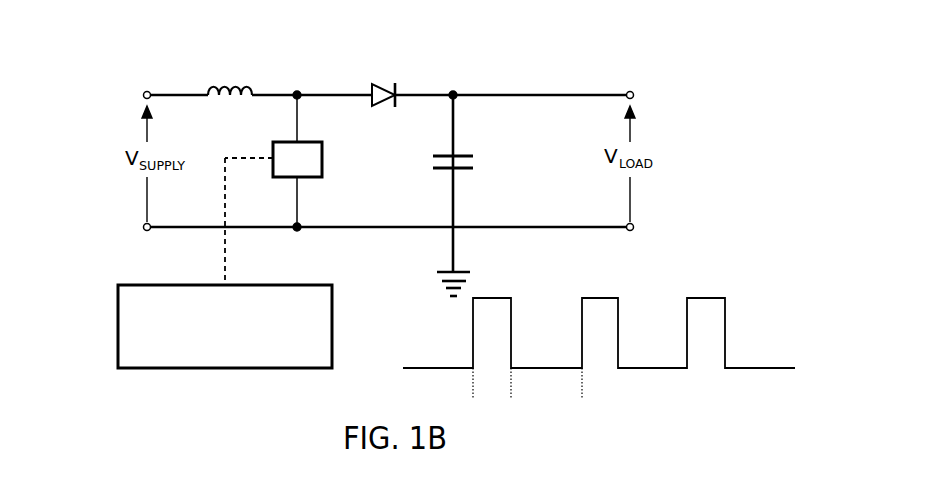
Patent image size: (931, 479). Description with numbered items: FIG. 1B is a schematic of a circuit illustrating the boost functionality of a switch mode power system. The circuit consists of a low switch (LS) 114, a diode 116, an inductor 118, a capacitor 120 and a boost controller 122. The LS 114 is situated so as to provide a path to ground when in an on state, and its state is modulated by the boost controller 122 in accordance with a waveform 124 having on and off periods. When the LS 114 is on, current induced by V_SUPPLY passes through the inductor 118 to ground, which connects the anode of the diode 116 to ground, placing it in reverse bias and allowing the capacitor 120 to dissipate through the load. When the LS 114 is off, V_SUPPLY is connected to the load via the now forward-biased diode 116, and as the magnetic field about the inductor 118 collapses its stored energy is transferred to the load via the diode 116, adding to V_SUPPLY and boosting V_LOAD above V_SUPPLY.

The low switch (LS) 114 is at (322, 158).
The diode 116 is at (362, 93).
The inductor 118 is at (235, 88).
The capacitor 120 is at (483, 160).
The boost controller 122 is at (118, 325).
The waveform 124 is at (747, 313).